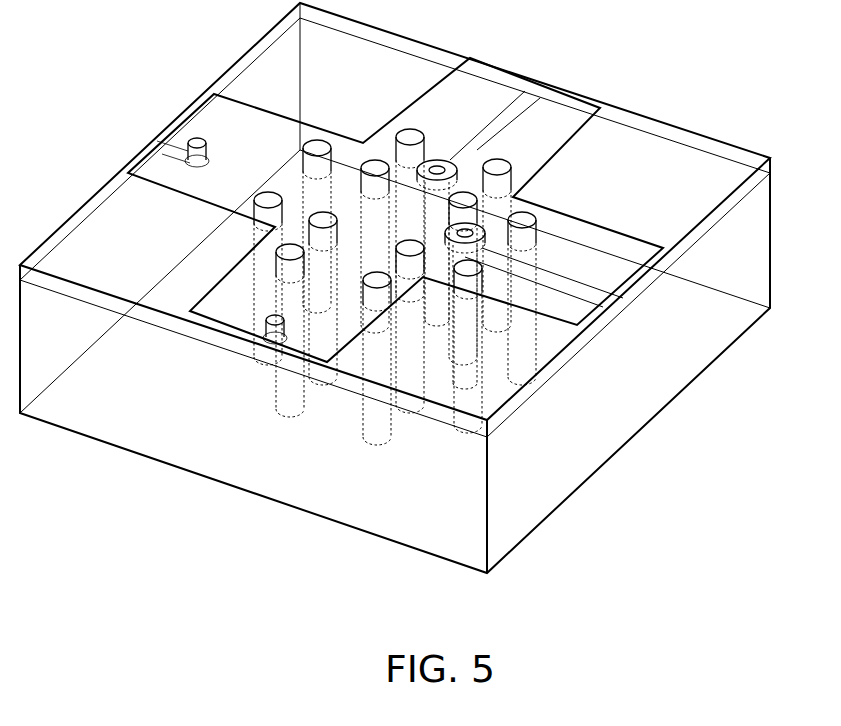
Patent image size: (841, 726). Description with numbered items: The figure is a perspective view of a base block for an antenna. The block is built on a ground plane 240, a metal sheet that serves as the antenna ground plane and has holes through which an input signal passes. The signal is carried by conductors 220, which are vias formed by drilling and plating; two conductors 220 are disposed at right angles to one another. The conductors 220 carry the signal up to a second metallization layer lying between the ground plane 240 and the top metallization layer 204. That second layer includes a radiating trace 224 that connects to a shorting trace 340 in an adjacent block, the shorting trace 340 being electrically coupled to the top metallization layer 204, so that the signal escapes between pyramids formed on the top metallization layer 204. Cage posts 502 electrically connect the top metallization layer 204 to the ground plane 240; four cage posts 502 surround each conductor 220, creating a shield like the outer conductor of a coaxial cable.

The top metallization layer 204 is at (452, 87).
The conductors 220 is at (429, 166).
The radiating trace 224 is at (483, 143).
The ground plane 240 is at (182, 455).
The shorting trace 340 is at (167, 147).
The cage posts 502 is at (467, 213).